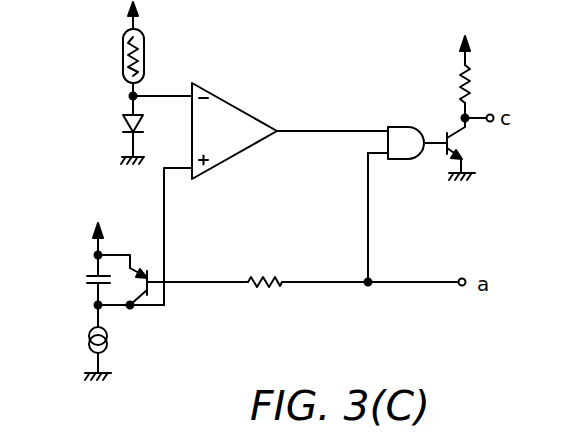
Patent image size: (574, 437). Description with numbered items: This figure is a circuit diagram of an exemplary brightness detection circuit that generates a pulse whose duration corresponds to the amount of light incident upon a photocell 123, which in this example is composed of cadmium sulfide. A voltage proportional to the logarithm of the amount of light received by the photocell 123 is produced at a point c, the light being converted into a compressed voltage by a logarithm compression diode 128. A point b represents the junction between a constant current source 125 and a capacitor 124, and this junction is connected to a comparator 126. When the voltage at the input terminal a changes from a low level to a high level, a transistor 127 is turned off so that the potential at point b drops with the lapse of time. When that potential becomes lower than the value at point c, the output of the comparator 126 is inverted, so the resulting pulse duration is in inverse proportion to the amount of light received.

The photocell 123 is at (144, 48).
The capacitor 124 is at (88, 283).
The constant current source 125 is at (110, 338).
The comparator 126 is at (232, 158).
The transistor 127 is at (156, 249).
The logarithm compression diode 128 is at (122, 118).